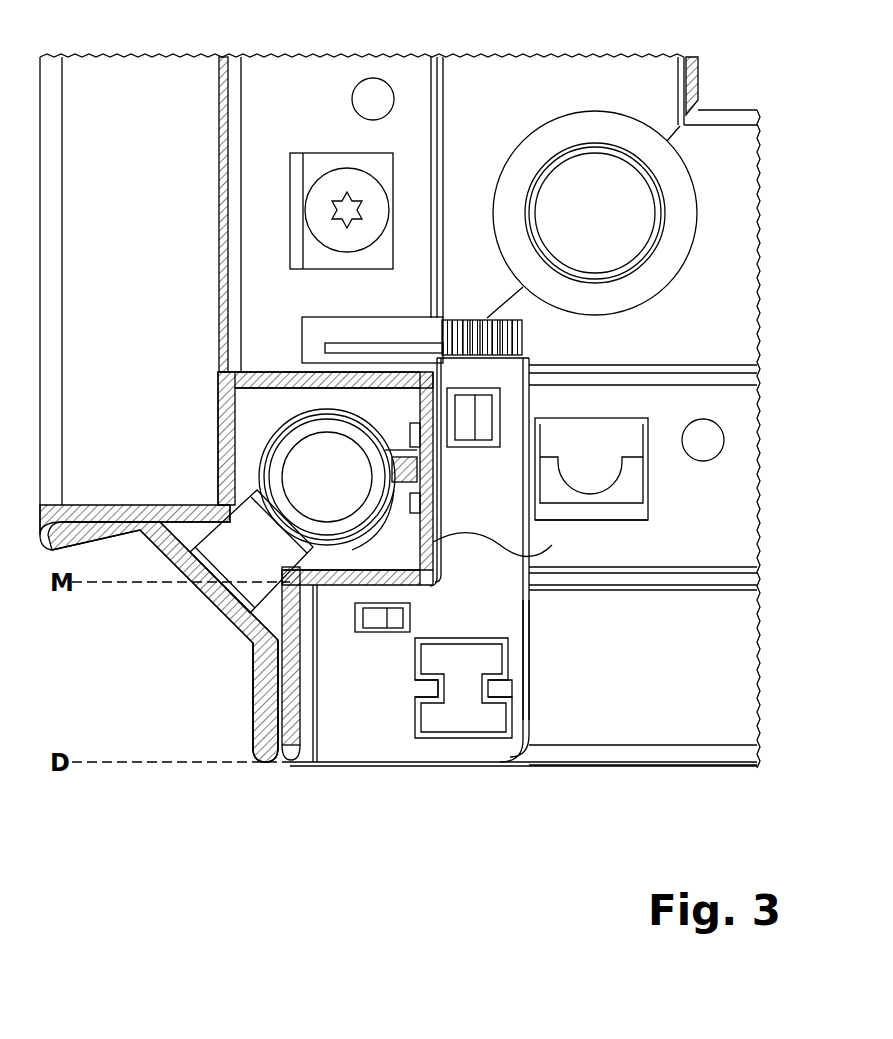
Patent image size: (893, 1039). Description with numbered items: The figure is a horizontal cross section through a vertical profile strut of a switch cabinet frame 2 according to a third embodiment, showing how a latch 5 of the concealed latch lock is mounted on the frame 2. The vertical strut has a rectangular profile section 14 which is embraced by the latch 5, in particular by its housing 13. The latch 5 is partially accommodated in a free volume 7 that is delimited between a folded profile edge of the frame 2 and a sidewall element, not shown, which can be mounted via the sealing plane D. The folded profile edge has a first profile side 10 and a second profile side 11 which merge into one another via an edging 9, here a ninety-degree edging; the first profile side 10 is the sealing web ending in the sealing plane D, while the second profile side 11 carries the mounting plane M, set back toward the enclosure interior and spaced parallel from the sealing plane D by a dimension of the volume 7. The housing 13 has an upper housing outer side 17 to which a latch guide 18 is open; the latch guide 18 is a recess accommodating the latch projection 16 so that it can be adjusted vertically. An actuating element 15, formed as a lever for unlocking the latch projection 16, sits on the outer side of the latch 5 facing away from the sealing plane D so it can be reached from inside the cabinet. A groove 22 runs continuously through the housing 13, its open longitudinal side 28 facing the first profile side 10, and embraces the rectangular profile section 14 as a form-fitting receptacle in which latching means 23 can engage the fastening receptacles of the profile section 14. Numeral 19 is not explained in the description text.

The frame 2 is at (488, 80).
The latch 5 is at (376, 778).
The volume 7 is at (303, 768).
The edging 9 is at (290, 570).
The first profile side 10 is at (272, 768).
The second profile side 11 is at (336, 525).
The housing 13 is at (500, 745).
The rectangular profile section 14 is at (258, 368).
The actuating element 15 is at (457, 320).
The latch projection 16 is at (465, 712).
The upper housing outer side 17 is at (353, 730).
The latch guide 18 is at (520, 622).
The left part of holder 19 is at (432, 740).
The groove 22 is at (507, 560).
The latching means 23 is at (402, 452).
The open longitudinal side 28 is at (297, 370).